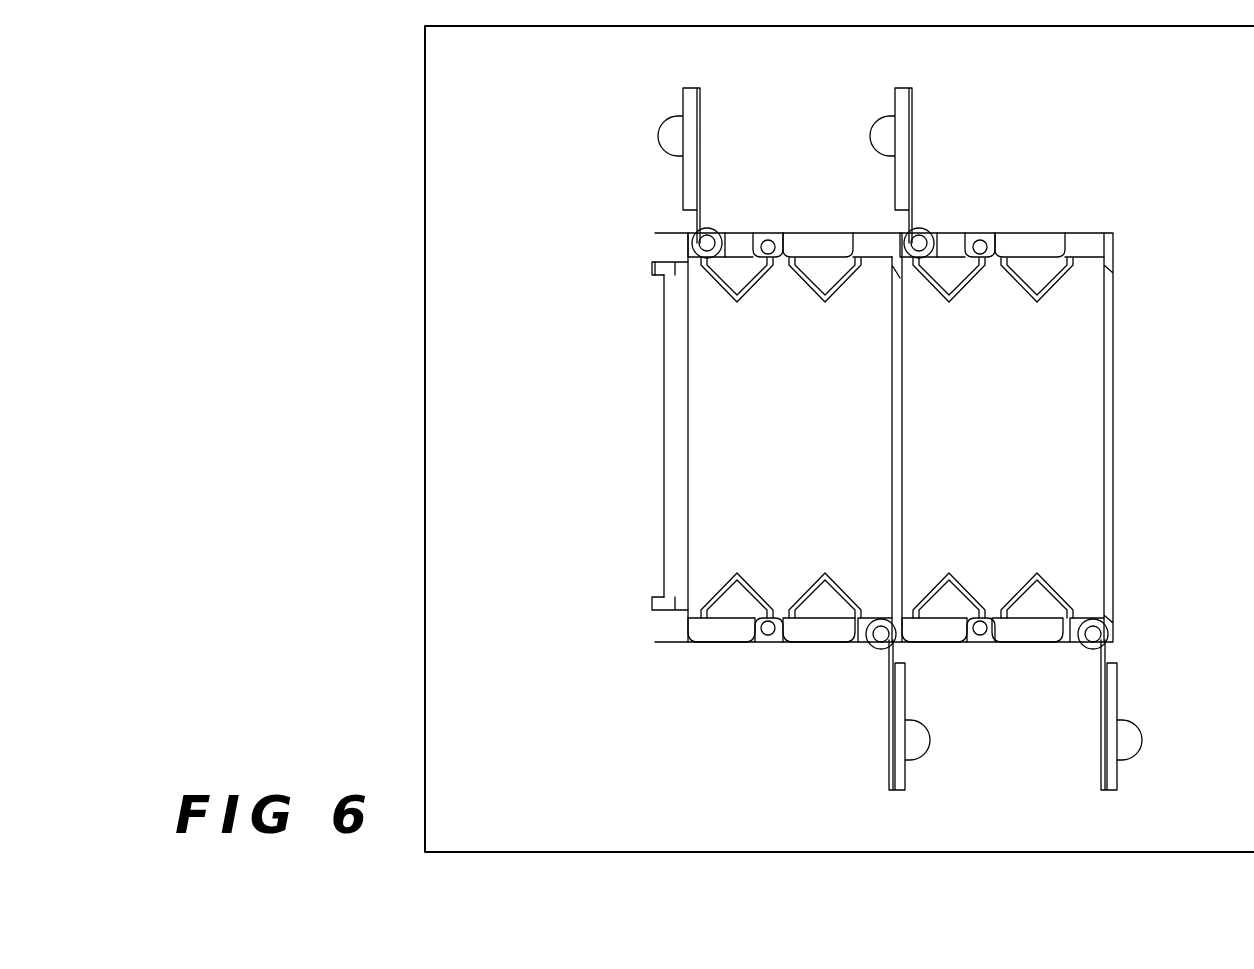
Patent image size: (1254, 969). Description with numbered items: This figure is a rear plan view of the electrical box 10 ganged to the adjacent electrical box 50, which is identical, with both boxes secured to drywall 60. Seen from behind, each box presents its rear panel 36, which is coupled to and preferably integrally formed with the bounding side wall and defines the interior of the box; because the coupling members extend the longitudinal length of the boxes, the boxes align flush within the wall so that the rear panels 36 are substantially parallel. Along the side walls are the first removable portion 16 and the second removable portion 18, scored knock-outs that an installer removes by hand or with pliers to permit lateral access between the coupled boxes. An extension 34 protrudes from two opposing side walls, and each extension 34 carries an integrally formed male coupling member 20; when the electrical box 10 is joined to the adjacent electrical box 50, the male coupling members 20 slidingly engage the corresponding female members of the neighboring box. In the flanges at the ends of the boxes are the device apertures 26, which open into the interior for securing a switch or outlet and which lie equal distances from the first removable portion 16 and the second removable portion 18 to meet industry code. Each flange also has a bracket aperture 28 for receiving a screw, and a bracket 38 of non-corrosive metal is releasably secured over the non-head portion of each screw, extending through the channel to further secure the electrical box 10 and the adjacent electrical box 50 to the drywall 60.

The electrical box 10 is at (1181, 610).
The first removable portion 16 is at (1105, 388).
The second removable portion 18 is at (655, 484).
The male coupling member 20 is at (655, 248).
The device aperture 26 is at (770, 238).
The bracket aperture 28 is at (708, 228).
The extension 34 is at (677, 266).
The rear panel 36 is at (798, 456).
The bracket 38 is at (700, 106).
The adjacent electrical box 50 is at (561, 613).
The drywall 60 is at (561, 380).